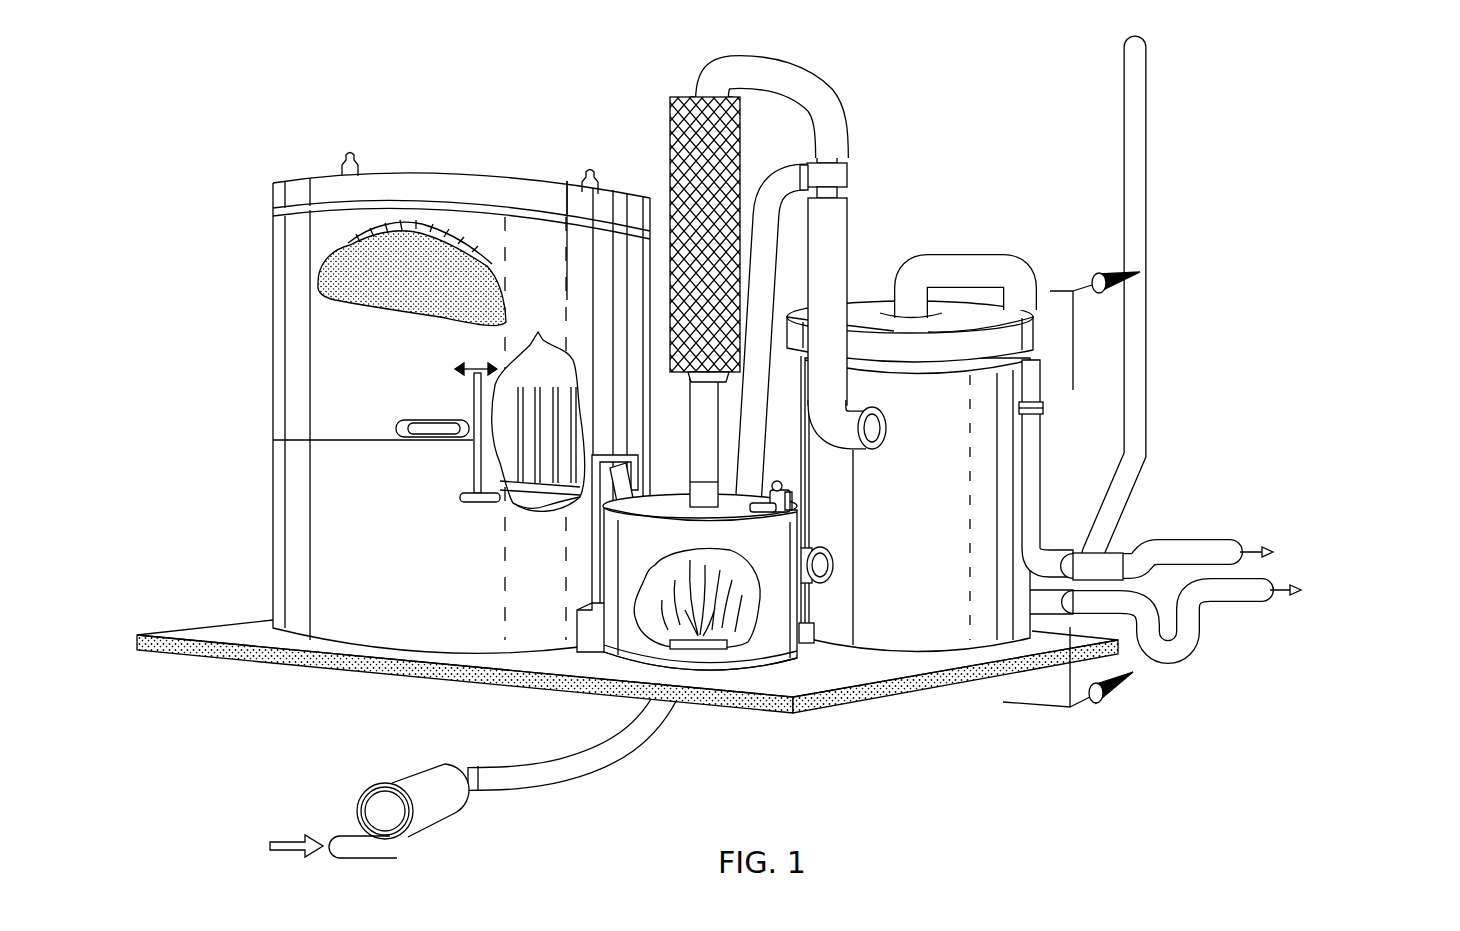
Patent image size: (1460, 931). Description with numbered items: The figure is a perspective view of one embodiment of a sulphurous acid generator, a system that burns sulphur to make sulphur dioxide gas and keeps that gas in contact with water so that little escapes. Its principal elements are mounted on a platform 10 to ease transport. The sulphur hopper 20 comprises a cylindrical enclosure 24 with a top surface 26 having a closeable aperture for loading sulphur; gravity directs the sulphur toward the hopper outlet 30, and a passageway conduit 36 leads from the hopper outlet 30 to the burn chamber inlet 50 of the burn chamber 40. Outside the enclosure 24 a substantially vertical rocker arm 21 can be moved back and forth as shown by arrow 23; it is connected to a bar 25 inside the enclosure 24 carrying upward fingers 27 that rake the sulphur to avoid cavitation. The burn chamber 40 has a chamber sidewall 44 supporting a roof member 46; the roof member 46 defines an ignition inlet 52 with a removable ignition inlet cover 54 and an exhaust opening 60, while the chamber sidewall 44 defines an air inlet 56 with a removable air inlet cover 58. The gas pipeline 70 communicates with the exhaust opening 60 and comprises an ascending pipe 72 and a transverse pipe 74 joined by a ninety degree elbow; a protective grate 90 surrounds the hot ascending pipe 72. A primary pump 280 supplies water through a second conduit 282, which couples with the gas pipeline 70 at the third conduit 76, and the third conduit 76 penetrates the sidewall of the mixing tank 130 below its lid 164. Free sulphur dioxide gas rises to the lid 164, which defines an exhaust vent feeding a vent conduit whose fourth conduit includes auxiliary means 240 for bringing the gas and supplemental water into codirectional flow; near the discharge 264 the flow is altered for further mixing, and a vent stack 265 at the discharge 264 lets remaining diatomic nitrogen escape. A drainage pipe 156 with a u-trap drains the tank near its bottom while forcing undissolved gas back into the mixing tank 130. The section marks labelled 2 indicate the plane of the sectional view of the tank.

The platform 10 is at (243, 633).
The sulphur hopper 20 is at (424, 387).
The rocker arm 21 is at (448, 437).
The arrow 23 is at (476, 355).
The enclosure 24 is at (340, 395).
The bar 25 is at (528, 500).
The top surface 26 is at (437, 180).
The fingers 27 is at (536, 345).
The hopper outlet 30 is at (598, 612).
The passageway conduit 36 is at (603, 645).
The burn chamber 40 is at (651, 615).
The chamber sidewall 44 is at (760, 643).
The roof member 46 is at (668, 500).
The burn chamber inlet 50 is at (645, 600).
The ignition inlet 52 is at (790, 497).
The ignition inlet cover 54 is at (772, 486).
The air inlet 56 is at (811, 553).
The air inlet cover 58 is at (807, 645).
The exhaust opening 60 is at (722, 458).
The gas pipeline 70 is at (700, 63).
The ascending pipe 72 is at (693, 417).
The transverse pipe 74 is at (760, 65).
The third conduit 76 is at (841, 271).
The protective grate 90 is at (670, 153).
The mixing tank 130 is at (952, 436).
The drainage pipe 156 is at (1097, 603).
The lid 164 is at (866, 303).
The auxiliary means 240 is at (1033, 416).
The discharge 264 is at (1113, 548).
The vent stack 265 is at (1137, 143).
The primary pump 280 is at (432, 820).
The second conduit 282 is at (580, 771).
The section line 2- 2 is at (1071, 504).